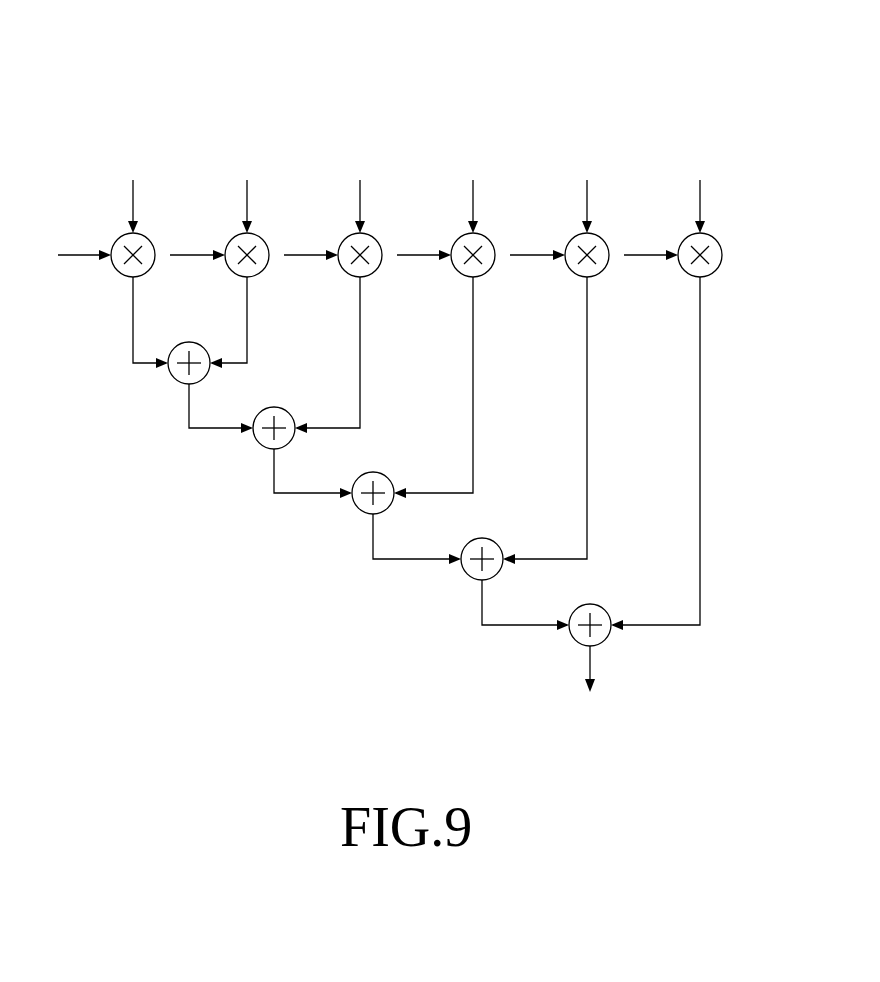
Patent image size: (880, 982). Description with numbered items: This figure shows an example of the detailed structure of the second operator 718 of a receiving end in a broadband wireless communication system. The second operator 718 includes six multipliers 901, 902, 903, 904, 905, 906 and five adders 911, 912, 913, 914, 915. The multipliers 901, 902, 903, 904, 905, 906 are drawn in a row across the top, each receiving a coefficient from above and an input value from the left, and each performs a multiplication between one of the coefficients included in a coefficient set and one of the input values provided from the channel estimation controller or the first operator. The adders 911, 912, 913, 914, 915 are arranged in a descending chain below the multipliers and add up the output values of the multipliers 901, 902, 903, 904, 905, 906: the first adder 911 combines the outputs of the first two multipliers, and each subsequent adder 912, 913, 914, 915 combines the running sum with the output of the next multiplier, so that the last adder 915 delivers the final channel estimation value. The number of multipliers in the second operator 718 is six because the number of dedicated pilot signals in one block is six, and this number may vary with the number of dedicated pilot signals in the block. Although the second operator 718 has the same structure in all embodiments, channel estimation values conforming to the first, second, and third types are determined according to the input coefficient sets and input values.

The second operator 718 is at (766, 84).
The multiplier 901 is at (148, 241).
The multiplier 902 is at (262, 241).
The multiplier 903 is at (375, 241).
The multiplier 904 is at (488, 241).
The multiplier 905 is at (602, 241).
The multiplier 906 is at (715, 241).
The adder 911 is at (203, 348).
The adder 912 is at (288, 413).
The adder 913 is at (387, 478).
The adder 914 is at (496, 544).
The adder 915 is at (604, 610).